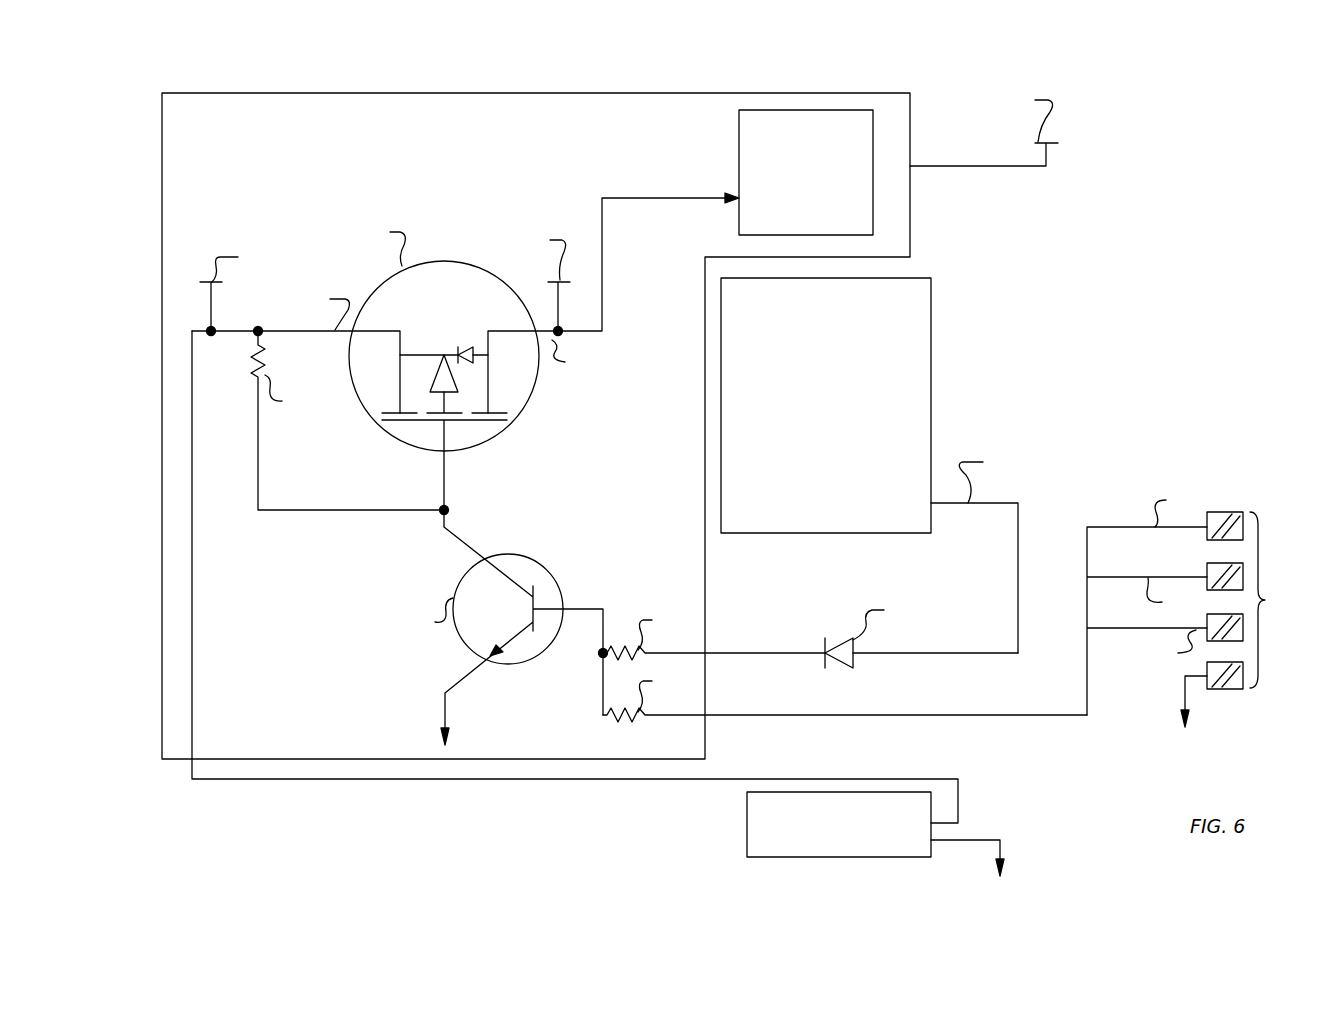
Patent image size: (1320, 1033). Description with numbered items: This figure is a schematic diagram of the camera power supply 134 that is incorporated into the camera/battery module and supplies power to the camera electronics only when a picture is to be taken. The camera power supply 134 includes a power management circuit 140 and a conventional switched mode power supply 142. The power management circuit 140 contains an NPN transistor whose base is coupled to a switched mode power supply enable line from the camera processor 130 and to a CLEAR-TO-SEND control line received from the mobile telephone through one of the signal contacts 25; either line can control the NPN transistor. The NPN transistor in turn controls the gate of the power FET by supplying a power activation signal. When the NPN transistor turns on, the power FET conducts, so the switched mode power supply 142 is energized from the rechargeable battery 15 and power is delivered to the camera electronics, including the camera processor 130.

The rechargeable battery 15 is at (747, 827).
The signal contacts 25 is at (1189, 608).
The camera processor 130 is at (931, 348).
The camera power supply 134 is at (910, 193).
The power management circuit 140 is at (530, 464).
The switched mode power supply 142 is at (739, 143).